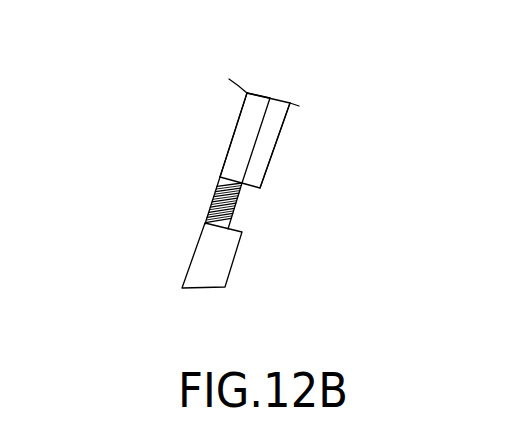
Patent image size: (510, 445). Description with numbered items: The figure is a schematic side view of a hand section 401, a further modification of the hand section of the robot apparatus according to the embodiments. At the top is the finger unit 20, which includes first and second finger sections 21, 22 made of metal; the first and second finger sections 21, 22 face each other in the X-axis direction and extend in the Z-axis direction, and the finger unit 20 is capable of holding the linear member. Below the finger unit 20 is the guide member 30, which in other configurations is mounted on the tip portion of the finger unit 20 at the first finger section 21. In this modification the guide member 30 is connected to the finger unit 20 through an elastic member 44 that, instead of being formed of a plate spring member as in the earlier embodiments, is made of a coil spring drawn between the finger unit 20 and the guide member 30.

The hand section 401 is at (110, 110).
The finger unit 20 is at (355, 118).
The first finger section 21 is at (253, 107).
The second finger section 22 is at (265, 142).
The elastic member 44 is at (210, 199).
The guide member 30 is at (233, 263).